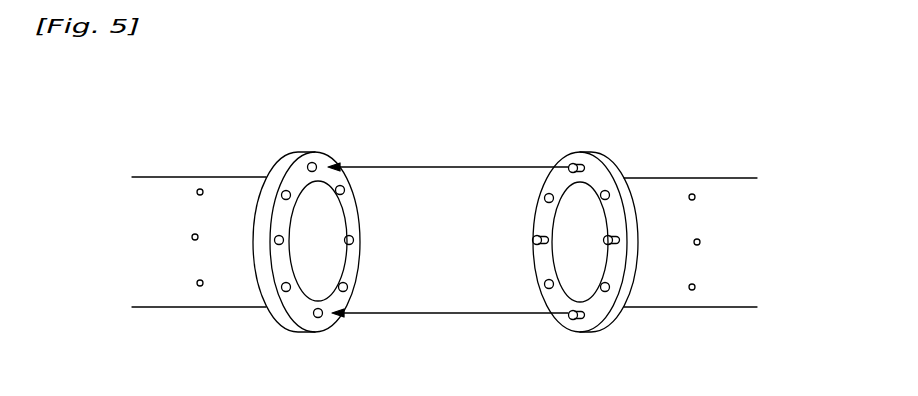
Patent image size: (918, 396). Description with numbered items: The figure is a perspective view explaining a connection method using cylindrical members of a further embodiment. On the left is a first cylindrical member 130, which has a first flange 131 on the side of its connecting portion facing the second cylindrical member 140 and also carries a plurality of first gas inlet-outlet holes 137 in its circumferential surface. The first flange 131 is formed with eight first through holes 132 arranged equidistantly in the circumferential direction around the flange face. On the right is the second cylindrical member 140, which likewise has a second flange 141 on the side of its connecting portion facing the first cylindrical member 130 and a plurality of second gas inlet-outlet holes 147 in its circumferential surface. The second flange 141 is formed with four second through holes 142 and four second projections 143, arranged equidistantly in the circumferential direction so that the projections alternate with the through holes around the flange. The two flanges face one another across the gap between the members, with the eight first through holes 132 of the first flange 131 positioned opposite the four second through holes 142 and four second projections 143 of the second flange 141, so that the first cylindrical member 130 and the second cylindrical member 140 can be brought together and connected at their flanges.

The first cylindrical member 130 is at (222, 172).
The first flange 131 is at (350, 215).
The first through holes 132 is at (344, 190).
The first gas inlet-outlet holes 137 is at (199, 287).
The second cylindrical member 140 is at (668, 174).
The second flange 141 is at (608, 167).
The second through holes 142 is at (544, 285).
The second projections 143 is at (568, 168).
The second gas inlet-outlet holes 147 is at (693, 290).